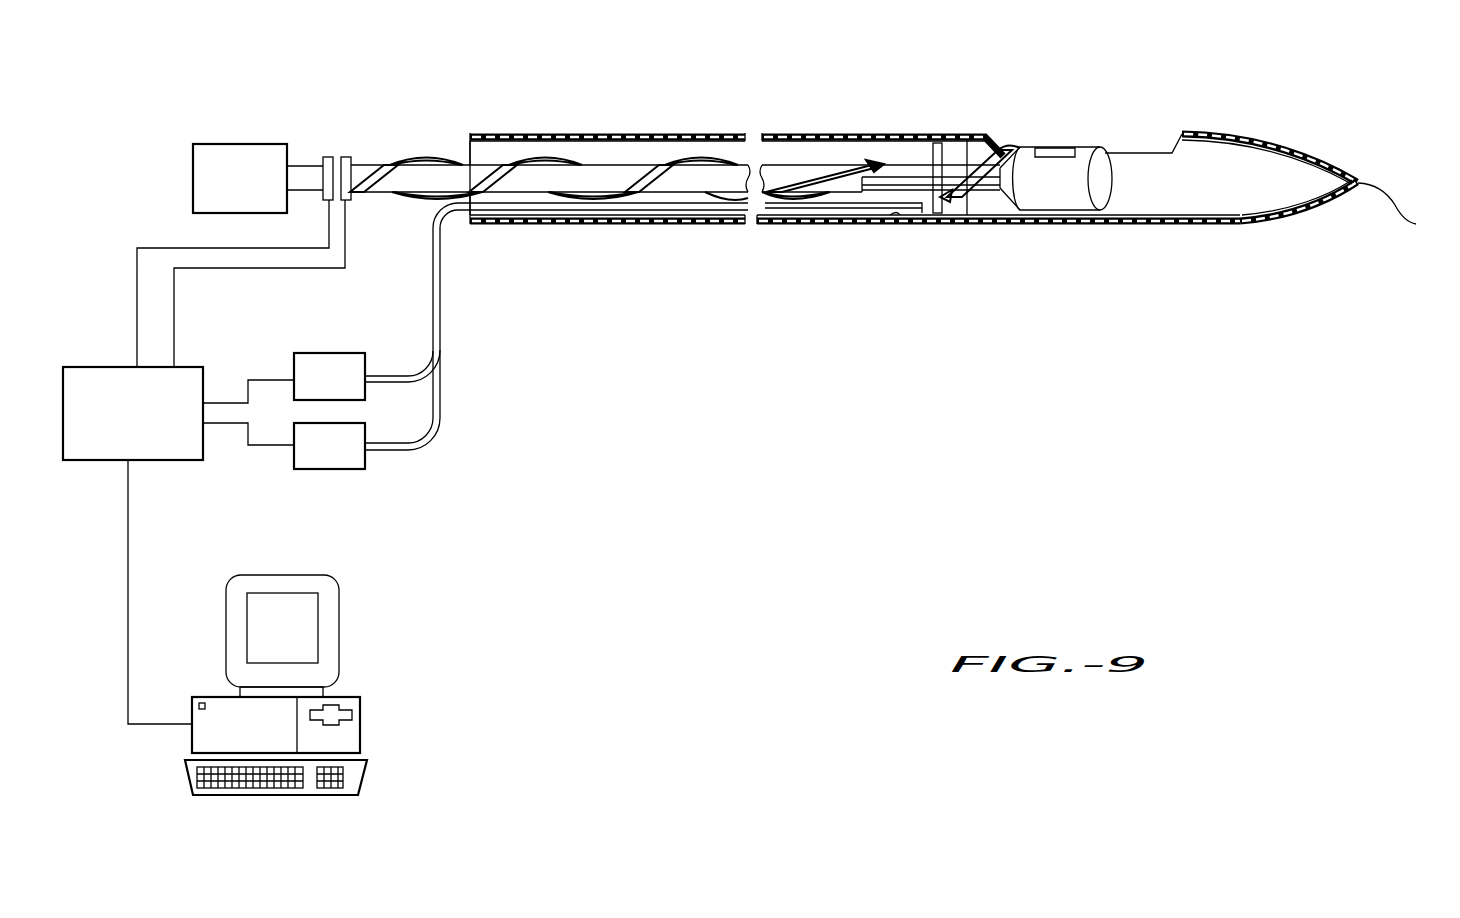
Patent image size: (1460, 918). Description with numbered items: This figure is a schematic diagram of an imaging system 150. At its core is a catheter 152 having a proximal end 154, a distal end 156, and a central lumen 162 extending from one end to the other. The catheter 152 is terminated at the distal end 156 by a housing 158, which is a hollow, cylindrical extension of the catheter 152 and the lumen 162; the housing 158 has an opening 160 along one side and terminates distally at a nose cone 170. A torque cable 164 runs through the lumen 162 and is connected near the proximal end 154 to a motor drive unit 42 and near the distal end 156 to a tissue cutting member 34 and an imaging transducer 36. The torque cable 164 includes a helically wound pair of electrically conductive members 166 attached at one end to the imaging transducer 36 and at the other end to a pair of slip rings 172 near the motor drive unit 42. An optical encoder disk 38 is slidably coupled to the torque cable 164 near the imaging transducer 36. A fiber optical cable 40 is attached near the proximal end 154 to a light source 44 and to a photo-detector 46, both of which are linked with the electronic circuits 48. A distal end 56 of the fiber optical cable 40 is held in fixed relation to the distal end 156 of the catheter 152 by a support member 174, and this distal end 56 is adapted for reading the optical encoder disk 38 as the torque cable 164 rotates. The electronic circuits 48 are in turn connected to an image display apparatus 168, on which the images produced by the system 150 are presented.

The tissue cutting member 34 is at (1086, 205).
The imaging transducer 36 is at (1055, 150).
The optical encoder disk 38 is at (935, 143).
The fiber optical cable 40 is at (777, 218).
The motor drive unit 42 is at (221, 160).
The light source 44 is at (312, 352).
The photo-detector 46 is at (330, 470).
The electronic circuits 48 is at (80, 447).
The distal end of fiber optical cable 56 is at (912, 215).
The imaging system 150 is at (814, 389).
The catheter 152 is at (515, 134).
The proximal end 154 is at (470, 147).
The distal end 156 is at (972, 215).
The housing 158 is at (1283, 135).
The opening 160 is at (1147, 126).
The central lumen 162 is at (612, 157).
The torque cable 164 is at (805, 175).
The pair of electrically conductive members 166 is at (866, 163).
The image display apparatus 168 is at (308, 623).
The nose cone 170 is at (1409, 211).
The slip rings 172 is at (333, 133).
The support member 174 is at (893, 215).